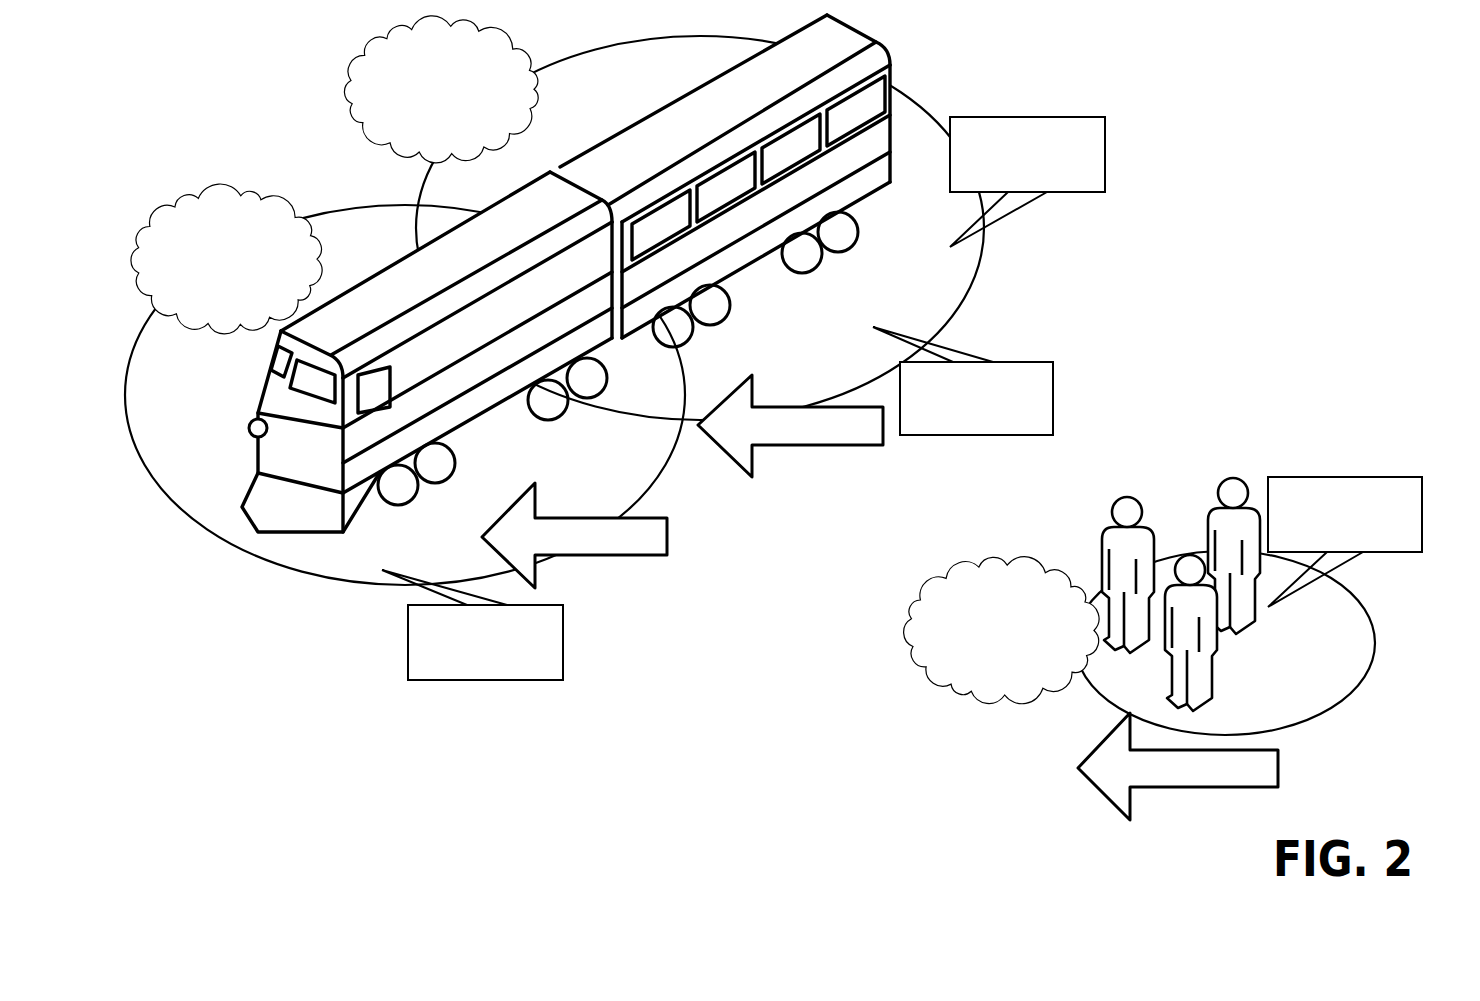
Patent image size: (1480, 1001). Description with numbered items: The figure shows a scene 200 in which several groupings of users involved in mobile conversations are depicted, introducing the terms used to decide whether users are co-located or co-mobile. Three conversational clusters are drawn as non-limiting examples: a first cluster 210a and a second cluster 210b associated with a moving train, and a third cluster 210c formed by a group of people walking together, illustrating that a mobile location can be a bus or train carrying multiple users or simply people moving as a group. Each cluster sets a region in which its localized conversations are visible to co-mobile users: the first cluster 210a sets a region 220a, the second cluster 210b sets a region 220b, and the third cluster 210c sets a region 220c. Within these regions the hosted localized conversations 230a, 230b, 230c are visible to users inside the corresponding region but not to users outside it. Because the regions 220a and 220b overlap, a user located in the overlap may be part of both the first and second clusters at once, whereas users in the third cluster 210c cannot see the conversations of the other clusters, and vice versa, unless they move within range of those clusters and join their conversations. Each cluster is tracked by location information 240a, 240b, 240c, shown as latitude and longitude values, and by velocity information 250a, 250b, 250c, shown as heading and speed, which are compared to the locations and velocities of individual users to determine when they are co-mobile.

The scene 200 is at (1405, 124).
The first conversation cluster 210a is at (203, 483).
The second conversation cluster 210b is at (953, 287).
The third conversation cluster 210c is at (1080, 698).
The region of first cluster 220a is at (387, 428).
The region of second cluster 220b is at (755, 228).
The region of third cluster 220c is at (1209, 659).
The localized conversation 230a is at (485, 680).
The localized conversation 230b is at (1105, 155).
The localized conversation 230c is at (1345, 477).
The location information 240a is at (227, 190).
The location information 240b is at (347, 88).
The location information 240c is at (993, 698).
The velocity information 250a is at (613, 557).
The velocity information 250b is at (828, 447).
The velocity information 250c is at (1107, 805).